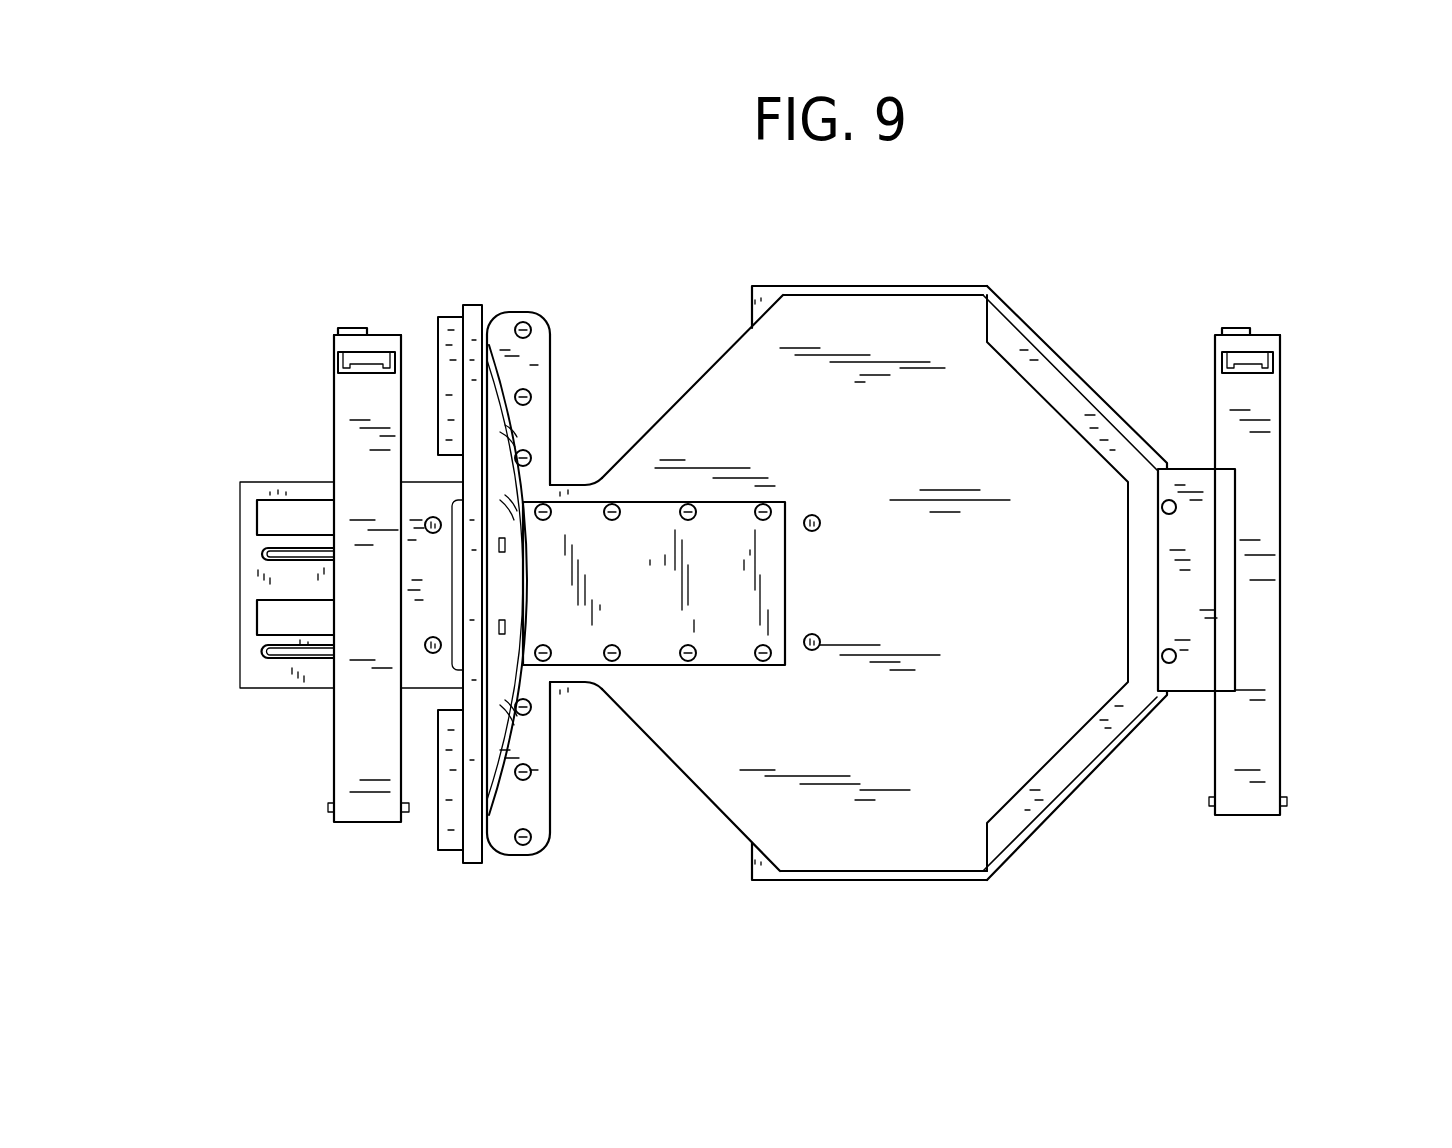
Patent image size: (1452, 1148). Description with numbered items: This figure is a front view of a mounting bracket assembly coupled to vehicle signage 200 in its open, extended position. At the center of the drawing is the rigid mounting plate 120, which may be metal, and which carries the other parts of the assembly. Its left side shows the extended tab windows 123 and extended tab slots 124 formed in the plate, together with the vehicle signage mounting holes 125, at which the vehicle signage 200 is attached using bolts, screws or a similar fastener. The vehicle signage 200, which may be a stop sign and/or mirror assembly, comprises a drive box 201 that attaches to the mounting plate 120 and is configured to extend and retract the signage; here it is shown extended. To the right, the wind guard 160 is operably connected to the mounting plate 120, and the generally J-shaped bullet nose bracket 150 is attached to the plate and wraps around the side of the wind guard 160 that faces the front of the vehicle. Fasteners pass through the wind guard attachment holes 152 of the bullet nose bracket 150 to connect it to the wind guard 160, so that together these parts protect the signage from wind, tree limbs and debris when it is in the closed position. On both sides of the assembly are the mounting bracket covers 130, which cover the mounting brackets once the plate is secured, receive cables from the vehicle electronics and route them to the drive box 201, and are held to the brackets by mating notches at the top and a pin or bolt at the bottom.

The mounting bracket cover 130 is at (334, 430).
The mounting plate 120 is at (420, 482).
The extended tab windows 123 is at (283, 515).
The extended tab slots 124 is at (270, 553).
The vehicle signage mounting holes 125 is at (428, 533).
The vehicle signage 200 is at (497, 703).
The drive box 201 is at (661, 652).
The wind guard 160 is at (923, 317).
The bullet nose bracket 150 is at (1187, 540).
The wind guard attachment holes 152 is at (1162, 655).